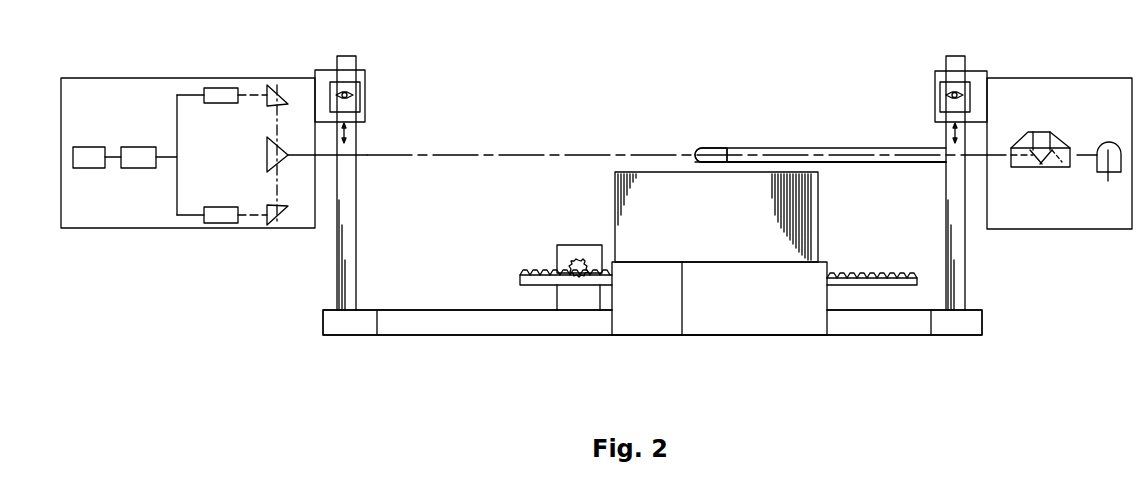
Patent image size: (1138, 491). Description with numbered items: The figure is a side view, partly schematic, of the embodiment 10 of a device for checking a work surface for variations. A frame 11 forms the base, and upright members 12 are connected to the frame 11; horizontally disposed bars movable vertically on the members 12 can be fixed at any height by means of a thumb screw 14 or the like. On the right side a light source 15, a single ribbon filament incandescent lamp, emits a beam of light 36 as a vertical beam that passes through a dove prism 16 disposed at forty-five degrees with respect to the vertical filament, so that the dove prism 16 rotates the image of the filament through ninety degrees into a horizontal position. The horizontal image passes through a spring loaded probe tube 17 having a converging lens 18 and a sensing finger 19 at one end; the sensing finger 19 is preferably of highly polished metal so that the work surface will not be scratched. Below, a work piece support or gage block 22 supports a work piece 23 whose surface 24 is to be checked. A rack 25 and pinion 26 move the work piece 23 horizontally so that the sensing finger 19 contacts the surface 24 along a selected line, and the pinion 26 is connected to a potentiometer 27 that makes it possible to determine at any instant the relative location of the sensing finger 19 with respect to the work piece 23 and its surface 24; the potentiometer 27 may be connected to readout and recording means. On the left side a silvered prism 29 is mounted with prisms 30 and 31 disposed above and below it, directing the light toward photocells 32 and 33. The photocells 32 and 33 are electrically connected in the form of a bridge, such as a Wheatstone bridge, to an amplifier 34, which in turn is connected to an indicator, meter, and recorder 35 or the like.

The embodiment 10 is at (507, 323).
The frame 11 is at (427, 323).
The upright members 12 is at (350, 201).
The thumb screw 14 is at (357, 94).
The light source 15 is at (1110, 145).
The dove prism 16 is at (1040, 135).
The probe tube 17 is at (837, 148).
The converging lens 18 is at (712, 147).
The sensing finger 19 is at (703, 168).
The gage block 22 is at (712, 327).
The work piece 23 is at (808, 210).
The surface 24 is at (803, 167).
The rack 25 is at (893, 275).
The pinion 26 is at (570, 262).
The potentiometer 27 is at (573, 250).
The silvered prism 29 is at (270, 155).
The prism 30 is at (272, 90).
The prism 31 is at (270, 222).
The photocell 32 is at (217, 90).
The photocell 33 is at (217, 215).
The amplifier 34 is at (135, 152).
The indicator, meter, and recorder 35 is at (90, 167).
The beam of light 36 is at (481, 157).